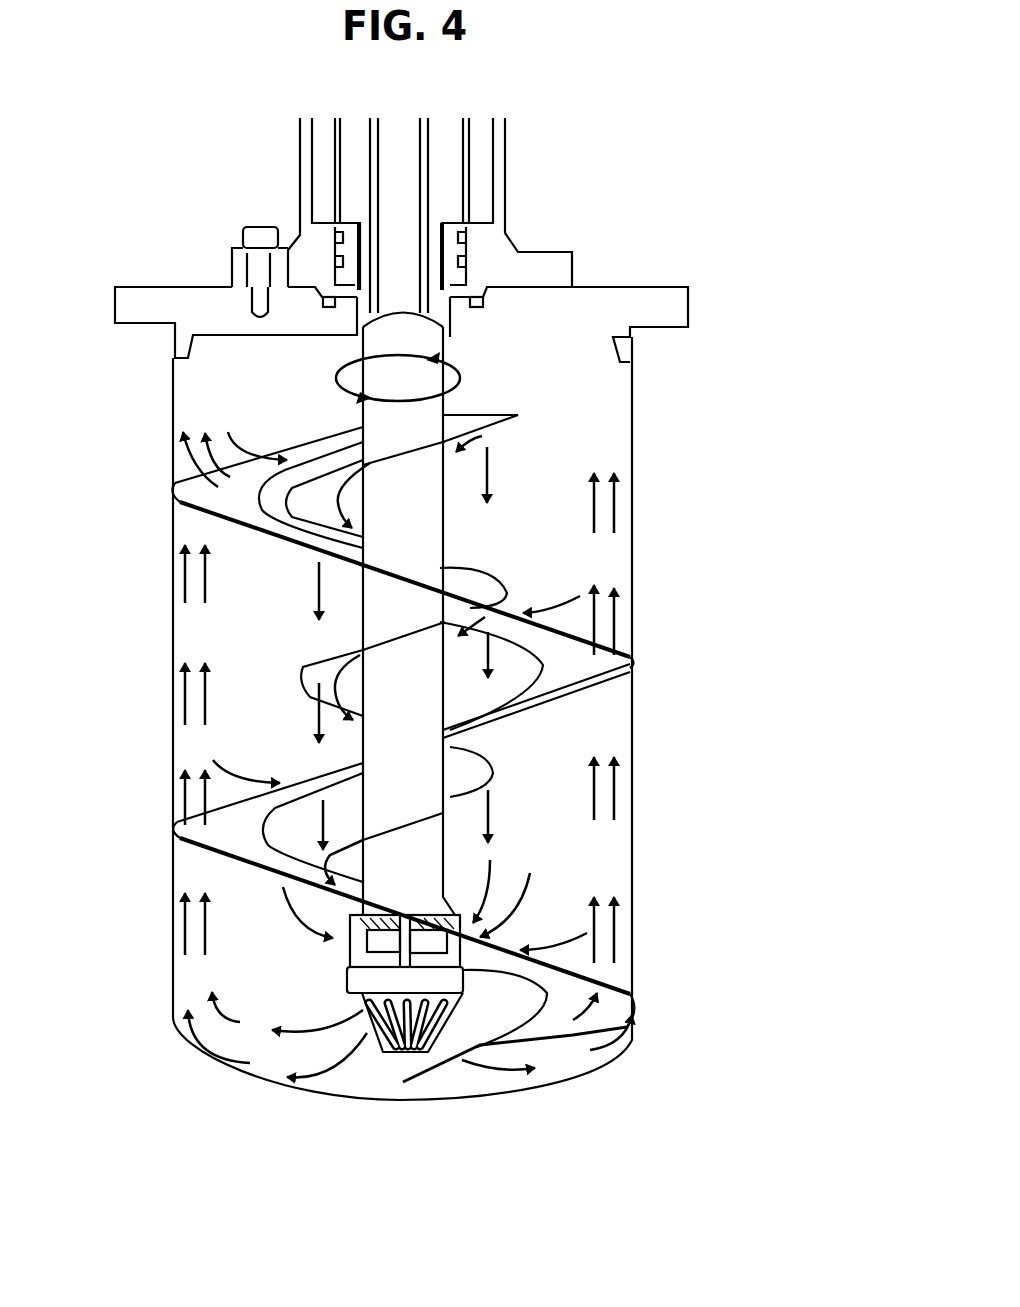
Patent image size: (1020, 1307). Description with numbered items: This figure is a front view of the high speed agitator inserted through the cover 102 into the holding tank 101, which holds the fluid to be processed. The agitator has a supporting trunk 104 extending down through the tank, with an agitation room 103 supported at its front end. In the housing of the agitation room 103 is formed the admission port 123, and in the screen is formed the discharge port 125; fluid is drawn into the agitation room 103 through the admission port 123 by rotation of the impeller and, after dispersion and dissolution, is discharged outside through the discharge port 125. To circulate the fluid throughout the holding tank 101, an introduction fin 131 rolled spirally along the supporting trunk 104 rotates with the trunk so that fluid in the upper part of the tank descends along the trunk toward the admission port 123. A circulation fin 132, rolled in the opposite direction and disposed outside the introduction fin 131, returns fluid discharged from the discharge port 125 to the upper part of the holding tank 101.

The holding tank 101 is at (552, 435).
The cover 102 is at (660, 250).
The agitation room 103 is at (395, 1066).
The supporting trunk 104 is at (407, 520).
The admission port 123 is at (348, 965).
The discharge port 125 is at (378, 1052).
The introduction fin 131 is at (445, 752).
The circulation fin 132 is at (630, 658).